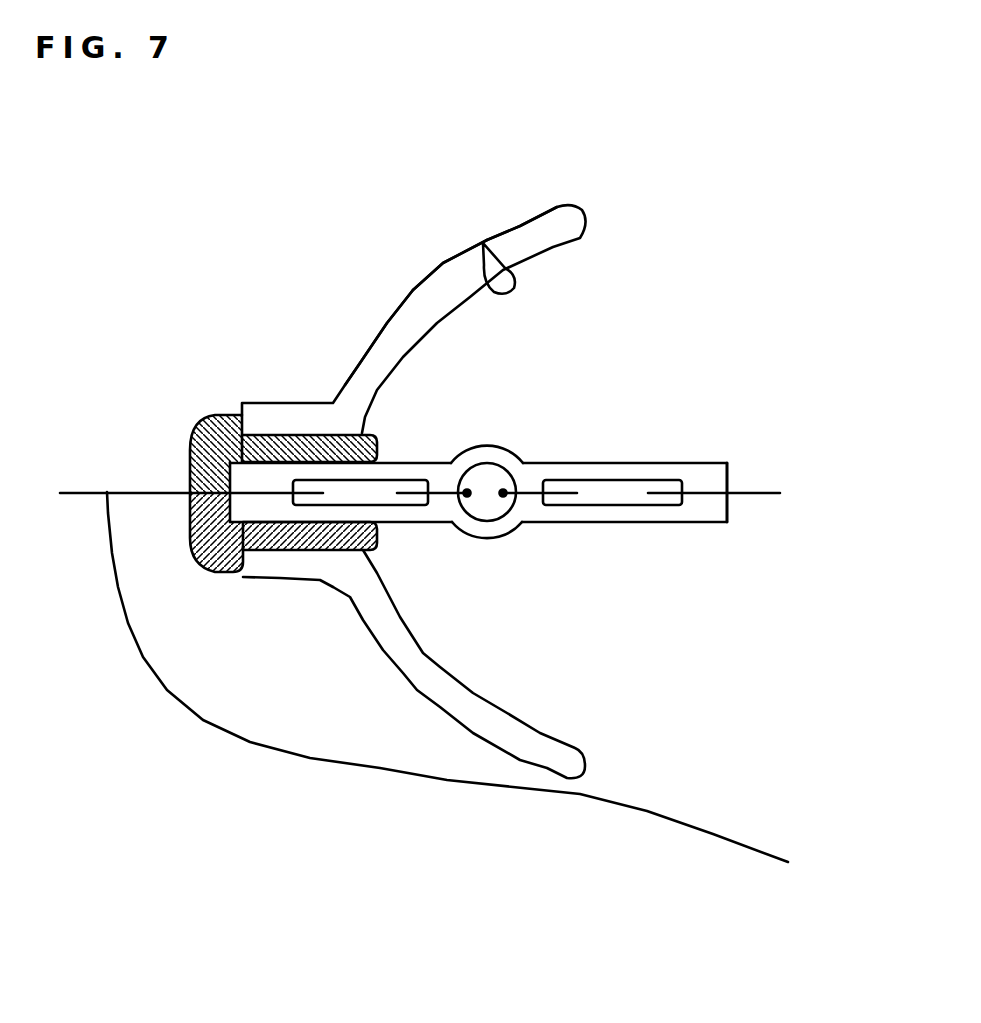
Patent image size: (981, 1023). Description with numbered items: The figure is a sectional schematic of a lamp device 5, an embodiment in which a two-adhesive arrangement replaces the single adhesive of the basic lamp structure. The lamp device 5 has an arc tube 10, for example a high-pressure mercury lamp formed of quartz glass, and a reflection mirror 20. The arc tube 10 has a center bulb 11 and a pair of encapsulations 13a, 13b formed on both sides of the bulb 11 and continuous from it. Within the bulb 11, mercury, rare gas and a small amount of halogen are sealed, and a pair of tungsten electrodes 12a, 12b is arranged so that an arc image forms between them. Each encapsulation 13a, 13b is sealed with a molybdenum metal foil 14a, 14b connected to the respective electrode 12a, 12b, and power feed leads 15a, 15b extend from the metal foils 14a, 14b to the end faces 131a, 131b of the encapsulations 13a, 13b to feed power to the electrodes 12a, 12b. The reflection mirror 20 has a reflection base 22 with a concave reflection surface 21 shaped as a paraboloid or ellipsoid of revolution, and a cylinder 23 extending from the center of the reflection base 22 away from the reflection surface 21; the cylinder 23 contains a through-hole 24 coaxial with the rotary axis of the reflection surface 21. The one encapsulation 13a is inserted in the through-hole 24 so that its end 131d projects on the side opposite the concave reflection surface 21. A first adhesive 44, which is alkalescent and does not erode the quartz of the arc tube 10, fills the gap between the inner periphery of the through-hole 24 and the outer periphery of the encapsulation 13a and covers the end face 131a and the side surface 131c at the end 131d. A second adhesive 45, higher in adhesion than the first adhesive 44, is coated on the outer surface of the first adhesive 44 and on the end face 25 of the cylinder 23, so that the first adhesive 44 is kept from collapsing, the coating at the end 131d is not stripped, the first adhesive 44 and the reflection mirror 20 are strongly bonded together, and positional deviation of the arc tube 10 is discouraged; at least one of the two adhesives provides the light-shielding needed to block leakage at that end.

The lamp device 5 is at (925, 165).
The arc tube 10 is at (866, 538).
The bulb 11 is at (503, 493).
The electrode 12a is at (467, 493).
The electrode 12b is at (523, 522).
The encapsulation 13a is at (422, 513).
The encapsulation 13b is at (630, 494).
The metal foil 14a is at (380, 494).
The metal foil 14b is at (657, 522).
The power feed lead 15a is at (477, 685).
The power feed lead 15b is at (750, 494).
The reflection mirror 20 is at (247, 365).
The concave reflection surface 21 is at (483, 242).
The reflection base 22 is at (430, 297).
The cylinder 23 is at (340, 417).
The through-hole 24 is at (322, 435).
The end face 25 is at (233, 415).
The first adhesive 44 is at (327, 551).
The second adhesive 45 is at (190, 453).
The end face 131a is at (192, 543).
The end face 131b is at (728, 480).
The side surface 131c is at (241, 574).
The end 131d is at (297, 641).